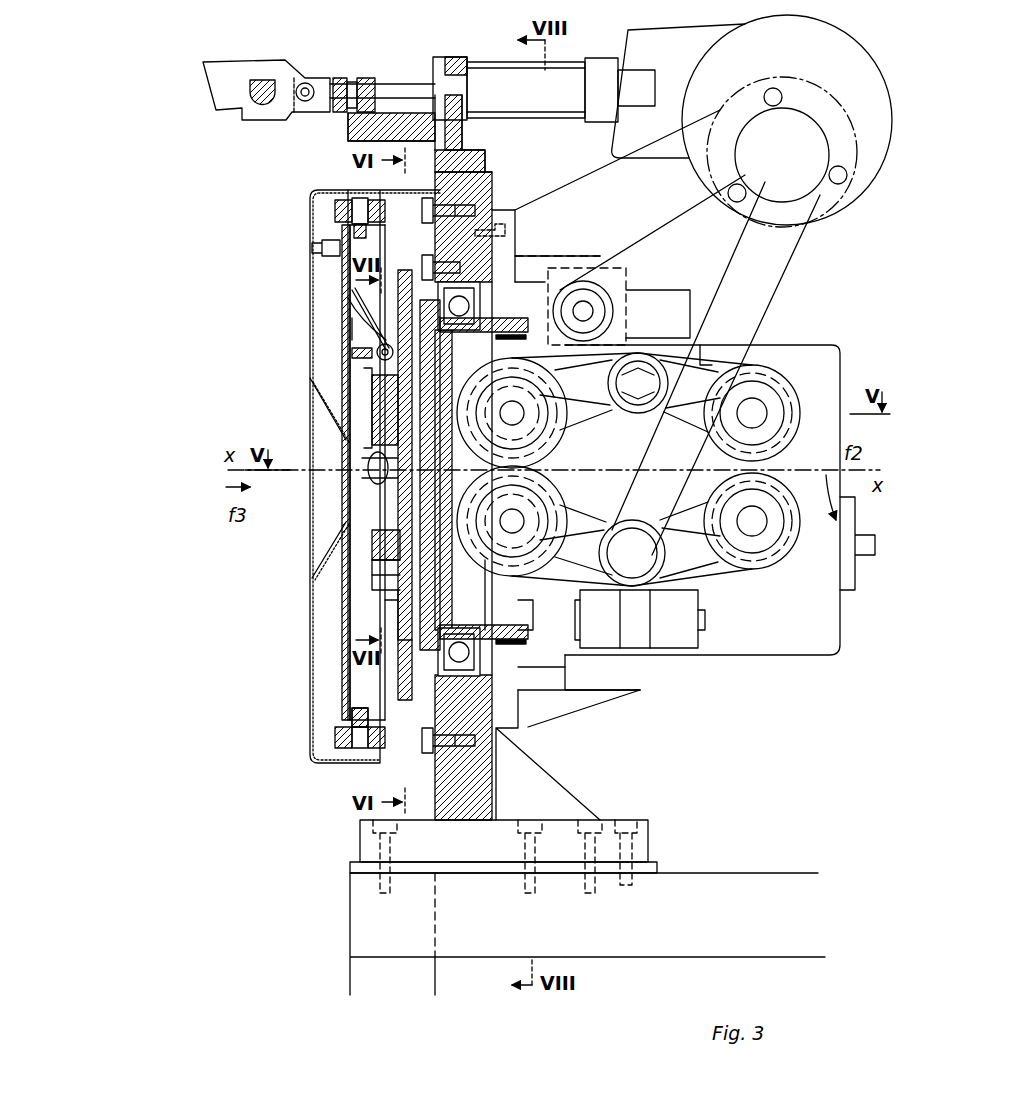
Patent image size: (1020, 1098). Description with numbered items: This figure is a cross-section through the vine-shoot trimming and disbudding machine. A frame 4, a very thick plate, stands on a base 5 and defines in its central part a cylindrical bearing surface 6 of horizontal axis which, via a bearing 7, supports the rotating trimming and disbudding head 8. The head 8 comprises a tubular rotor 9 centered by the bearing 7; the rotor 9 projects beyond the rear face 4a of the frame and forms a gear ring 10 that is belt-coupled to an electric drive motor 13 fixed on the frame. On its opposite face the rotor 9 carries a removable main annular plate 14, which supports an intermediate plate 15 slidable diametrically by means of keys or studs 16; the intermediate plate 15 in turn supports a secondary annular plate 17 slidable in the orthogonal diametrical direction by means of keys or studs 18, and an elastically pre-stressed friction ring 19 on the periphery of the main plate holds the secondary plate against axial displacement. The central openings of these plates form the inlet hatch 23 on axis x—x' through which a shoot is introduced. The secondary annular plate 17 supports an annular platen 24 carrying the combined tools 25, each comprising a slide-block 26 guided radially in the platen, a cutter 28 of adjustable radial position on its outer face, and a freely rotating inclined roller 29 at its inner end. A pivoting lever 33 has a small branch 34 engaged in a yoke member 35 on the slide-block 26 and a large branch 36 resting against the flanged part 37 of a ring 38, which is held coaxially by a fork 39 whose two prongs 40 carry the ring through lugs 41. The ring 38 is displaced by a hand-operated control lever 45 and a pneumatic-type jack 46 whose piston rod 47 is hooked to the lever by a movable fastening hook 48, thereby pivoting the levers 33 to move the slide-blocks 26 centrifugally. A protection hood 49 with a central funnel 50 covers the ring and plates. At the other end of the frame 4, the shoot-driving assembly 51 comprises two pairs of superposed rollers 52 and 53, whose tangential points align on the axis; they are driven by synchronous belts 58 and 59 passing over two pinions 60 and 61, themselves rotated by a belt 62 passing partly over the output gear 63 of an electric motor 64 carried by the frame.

The frame 4 is at (480, 792).
The rear face of the frame 4a is at (485, 165).
The base 5 is at (654, 945).
The cylindrical bearing surface 6 is at (505, 248).
The bearing 7 is at (525, 275).
The rotating trimming and disbudding head 8 is at (362, 552).
The rotor 9 is at (483, 479).
The gear ring 10 is at (556, 282).
The electric drive motor 13 is at (798, 640).
The main annular plate 14 is at (398, 626).
The intermediate plate 15 is at (470, 595).
The keys or studs 16 is at (512, 521).
The secondary annular plate 17 is at (372, 600).
The keys or studs 18 is at (512, 413).
The elastically pre-stressed friction ring 19 is at (386, 290).
The inlet hatch 23 is at (398, 492).
The annular platen 24 is at (380, 536).
The combined tool 25 is at (358, 440).
The slide-block 26 is at (372, 402).
The cutter 28 is at (362, 480).
The roller 29 is at (372, 462).
The pivoting lever 33 is at (352, 308).
The small branch 34 is at (376, 356).
The yoke member 35 is at (352, 330).
The large branch 36 is at (352, 292).
The flanged part 37 is at (342, 690).
The ring 38 is at (312, 246).
The fork 39 is at (330, 735).
The prongs 40 is at (335, 210).
The lugs 41 is at (358, 204).
The hand-operated control lever 45 is at (262, 104).
The pneumatic-type jack 46 is at (572, 70).
The piston rod 47 is at (395, 84).
The movable fastening hook 48 is at (240, 112).
The protection hood 49 is at (310, 662).
The funnel 50 is at (318, 552).
The assembly for driving a vine shoot 51 is at (780, 330).
The pair of rollers 52 is at (500, 590).
The pair of rollers 53 is at (800, 380).
The synchronous belt 58 is at (632, 469).
The synchronous belt 59 is at (700, 360).
The pinion 60 is at (650, 305).
The pinion 61 is at (645, 560).
The belt 62 is at (795, 250).
The output gear 63 is at (788, 144).
The electric motor 64 is at (792, 49).